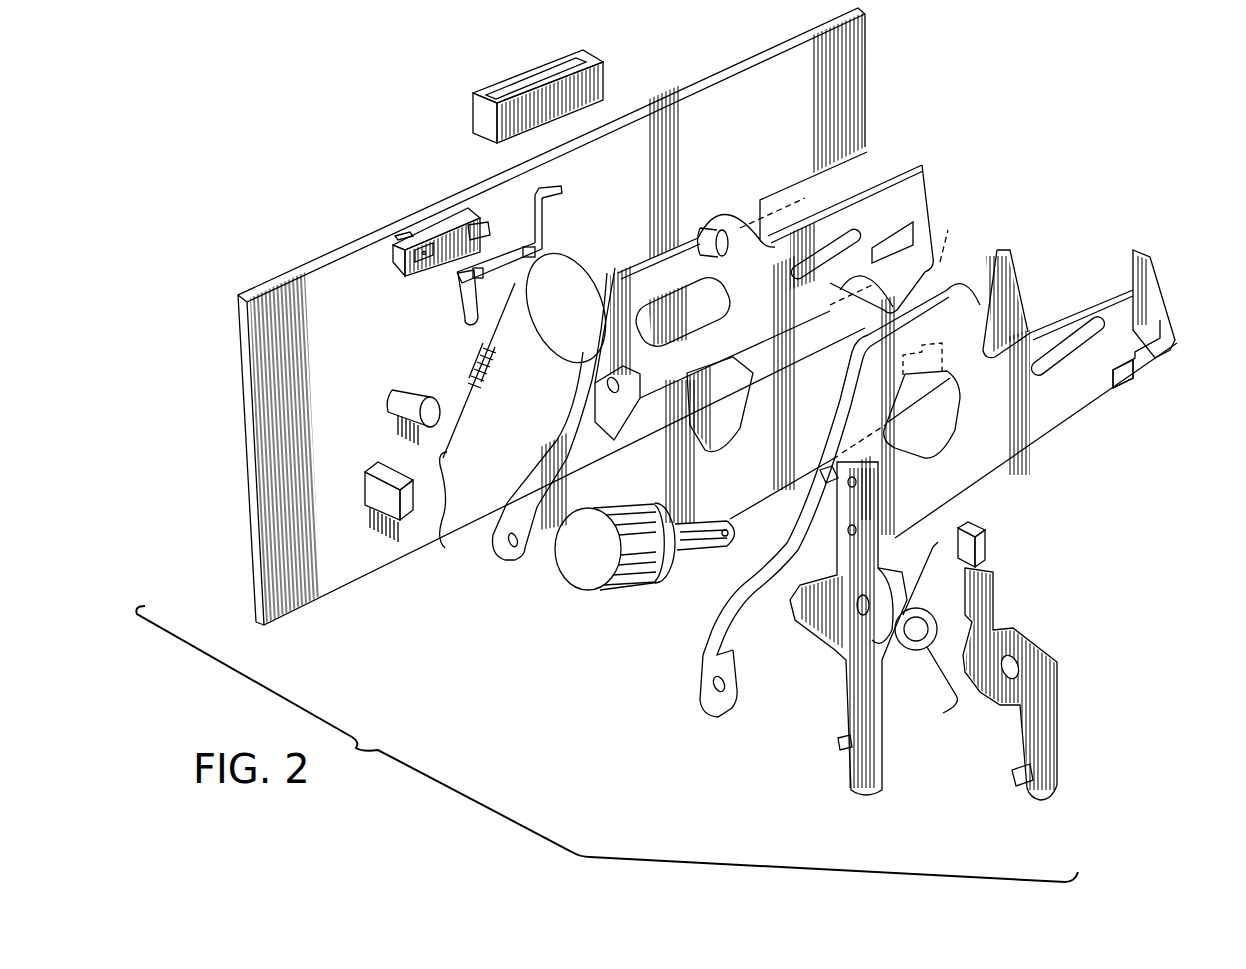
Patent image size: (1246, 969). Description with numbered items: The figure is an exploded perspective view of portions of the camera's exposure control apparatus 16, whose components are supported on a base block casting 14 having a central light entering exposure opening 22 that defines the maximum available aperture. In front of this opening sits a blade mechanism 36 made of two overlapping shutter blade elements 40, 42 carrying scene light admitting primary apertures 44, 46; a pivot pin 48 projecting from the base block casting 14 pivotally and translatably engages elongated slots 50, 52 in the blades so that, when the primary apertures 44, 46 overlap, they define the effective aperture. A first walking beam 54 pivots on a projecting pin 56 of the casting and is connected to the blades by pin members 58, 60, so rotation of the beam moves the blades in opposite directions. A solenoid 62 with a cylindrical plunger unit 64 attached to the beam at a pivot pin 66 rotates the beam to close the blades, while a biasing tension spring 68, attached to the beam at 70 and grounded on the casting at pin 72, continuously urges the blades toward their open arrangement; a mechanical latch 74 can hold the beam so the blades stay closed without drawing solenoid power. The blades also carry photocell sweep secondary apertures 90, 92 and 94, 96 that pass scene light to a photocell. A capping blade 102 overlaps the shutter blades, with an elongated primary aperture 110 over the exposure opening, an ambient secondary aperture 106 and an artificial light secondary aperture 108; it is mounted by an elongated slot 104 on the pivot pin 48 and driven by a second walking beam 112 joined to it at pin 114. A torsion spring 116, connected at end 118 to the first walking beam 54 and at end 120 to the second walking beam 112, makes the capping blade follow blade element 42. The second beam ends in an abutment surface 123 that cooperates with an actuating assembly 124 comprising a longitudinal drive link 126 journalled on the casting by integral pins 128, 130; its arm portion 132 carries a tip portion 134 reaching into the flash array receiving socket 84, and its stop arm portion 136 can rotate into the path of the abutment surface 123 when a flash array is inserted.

The base block casting 14 is at (863, 90).
The exposure control apparatus 16 is at (802, 279).
The light entering exposure opening 22 is at (577, 258).
The blade mechanism 36 is at (983, 351).
The shutter blade element 40 is at (1000, 267).
The shutter blade element 42 is at (1153, 297).
The primary aperture 44 is at (740, 397).
The primary aperture 46 is at (948, 443).
The pivot pin 48 is at (779, 207).
The elongated slot 50 is at (947, 287).
The elongated slot 52 is at (1073, 330).
The first walking beam 54 is at (833, 687).
The projecting pin 56 is at (408, 397).
The pin member 58 is at (822, 480).
The pin member 60 is at (838, 742).
The solenoid 62 is at (620, 593).
The plunger unit 64 is at (687, 553).
The pivot pin 66 is at (733, 539).
The biasing tension spring 68 is at (493, 360).
The spring attachment point 70 is at (455, 506).
The pin 72 is at (403, 233).
The mechanical latch 74 is at (385, 515).
The receiving socket 84 is at (612, 42).
The photocell sweep secondary aperture 90 is at (922, 414).
The photocell sweep secondary aperture 92 is at (937, 390).
The photocell sweep secondary aperture 94 is at (1157, 320).
The photocell sweep secondary aperture 96 is at (1130, 367).
The capping blade 102 is at (927, 177).
The elongated slot 104 is at (817, 257).
The ambient scene light admitting secondary aperture 106 is at (913, 227).
The artificial scene light admitting secondary aperture 108 is at (900, 259).
The elongated primary aperture 110 is at (657, 297).
The second walking beam 112 is at (1060, 698).
The pin 114 is at (1012, 782).
The torsion spring 116 is at (913, 678).
The spring end 118 is at (945, 556).
The spring end 120 is at (957, 707).
The abutment surface 123 is at (987, 545).
The actuating assembly 124 is at (452, 213).
The longitudinal drive link 126 is at (427, 252).
The integral pin 128 is at (395, 267).
The integral pin 130 is at (490, 247).
The arm portion 132 is at (528, 243).
The tip portion 134 is at (550, 188).
The stop arm portion 136 is at (470, 313).